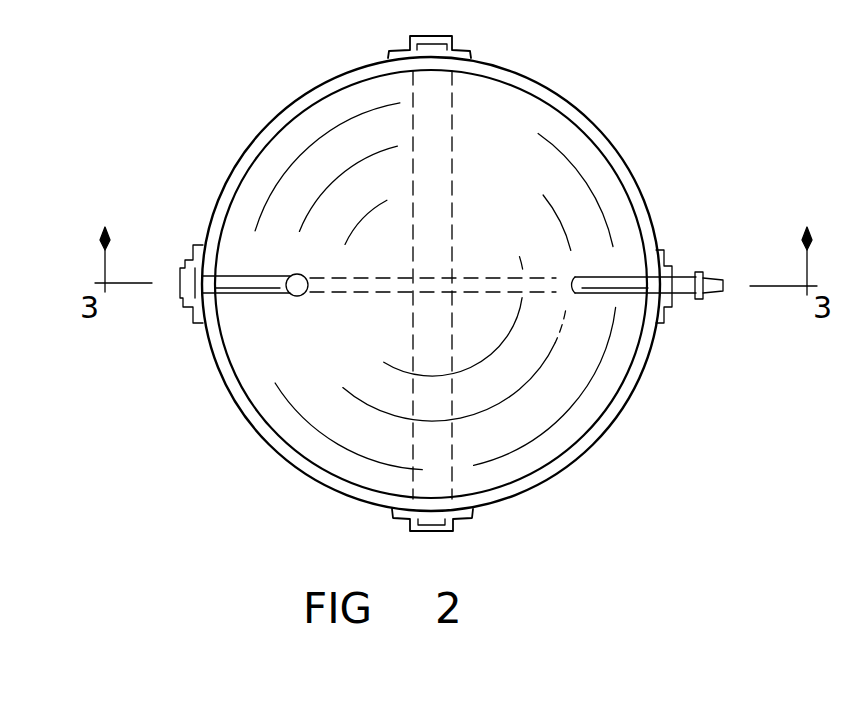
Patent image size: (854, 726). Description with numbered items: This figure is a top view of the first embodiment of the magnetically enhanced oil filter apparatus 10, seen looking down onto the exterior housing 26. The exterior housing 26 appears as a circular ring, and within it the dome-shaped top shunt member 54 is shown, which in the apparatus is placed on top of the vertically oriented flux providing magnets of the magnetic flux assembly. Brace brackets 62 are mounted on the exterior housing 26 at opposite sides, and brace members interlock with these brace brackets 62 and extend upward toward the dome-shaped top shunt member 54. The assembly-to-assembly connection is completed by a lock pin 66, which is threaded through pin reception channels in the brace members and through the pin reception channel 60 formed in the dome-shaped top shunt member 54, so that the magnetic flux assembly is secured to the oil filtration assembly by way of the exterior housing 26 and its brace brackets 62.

The magnetically enhanced oil filter apparatus 10 is at (193, 153).
The exterior housing 26 is at (637, 170).
The dome-shaped top shunt member 54 is at (580, 413).
The pin reception channel 60 is at (574, 277).
The brace brackets 62 is at (190, 303).
The lock pin 66 is at (245, 291).